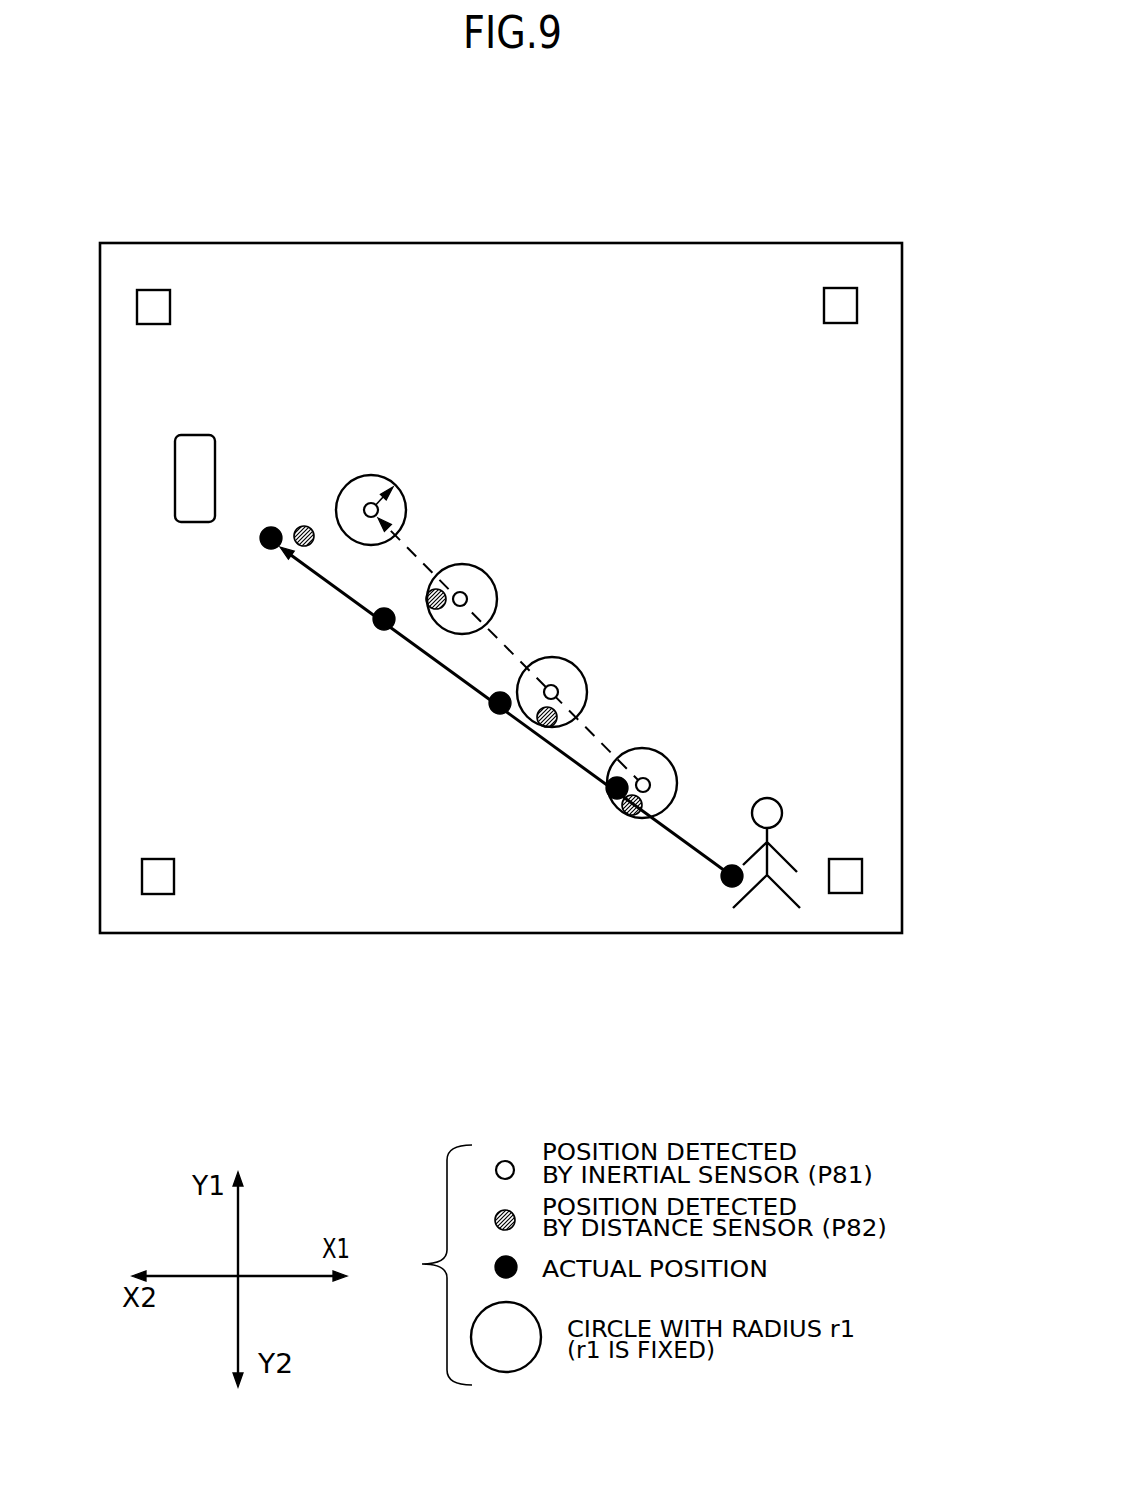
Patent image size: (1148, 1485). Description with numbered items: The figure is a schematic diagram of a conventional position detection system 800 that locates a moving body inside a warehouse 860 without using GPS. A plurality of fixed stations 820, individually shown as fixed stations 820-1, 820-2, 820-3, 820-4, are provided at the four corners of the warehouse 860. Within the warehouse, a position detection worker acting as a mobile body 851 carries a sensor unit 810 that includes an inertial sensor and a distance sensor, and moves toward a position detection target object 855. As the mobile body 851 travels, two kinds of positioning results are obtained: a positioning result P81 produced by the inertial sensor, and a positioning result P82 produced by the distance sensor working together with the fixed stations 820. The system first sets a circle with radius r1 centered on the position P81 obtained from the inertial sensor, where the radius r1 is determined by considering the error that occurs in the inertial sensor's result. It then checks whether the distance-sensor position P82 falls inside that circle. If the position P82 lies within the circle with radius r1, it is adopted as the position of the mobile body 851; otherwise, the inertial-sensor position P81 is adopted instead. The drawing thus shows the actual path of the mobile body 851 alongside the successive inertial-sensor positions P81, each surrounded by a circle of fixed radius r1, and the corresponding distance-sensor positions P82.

The position detection system 800 is at (501, 504).
The warehouse 860 is at (423, 242).
The fixed stations 820 is at (708, 976).
The fixed station 820-1 is at (845, 875).
The fixed station 820-2 is at (835, 300).
The fixed station 820-3 is at (160, 300).
The fixed station 820-4 is at (158, 875).
The position detection target object 855 is at (192, 498).
The mobile body 851 is at (790, 800).
The sensor unit 810 is at (733, 866).
The positioning result P81 is at (368, 505).
The positioning result P82 is at (302, 530).
The radius r1 is at (400, 508).